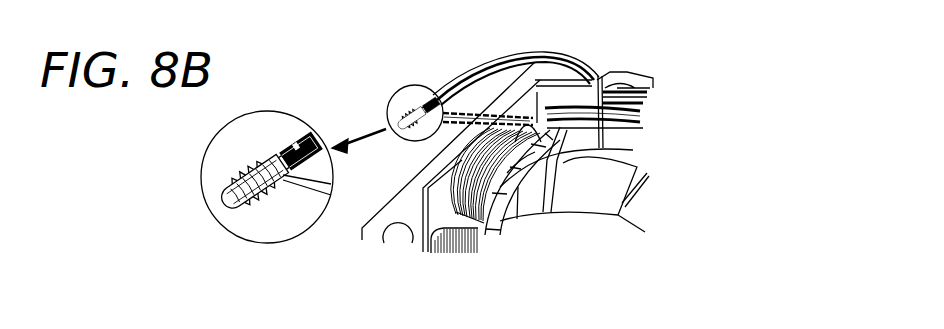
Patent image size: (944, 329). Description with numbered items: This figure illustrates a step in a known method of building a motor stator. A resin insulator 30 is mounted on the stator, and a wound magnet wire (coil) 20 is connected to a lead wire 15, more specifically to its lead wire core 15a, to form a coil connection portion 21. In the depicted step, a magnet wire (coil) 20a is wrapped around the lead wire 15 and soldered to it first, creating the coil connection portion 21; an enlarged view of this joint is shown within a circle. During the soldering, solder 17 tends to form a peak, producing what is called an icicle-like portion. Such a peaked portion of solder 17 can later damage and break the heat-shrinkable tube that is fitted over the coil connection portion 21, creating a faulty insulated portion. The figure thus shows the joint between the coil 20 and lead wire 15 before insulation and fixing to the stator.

The lead wire 15 is at (305, 143).
The lead wire core 15a is at (300, 147).
The solder 17 is at (233, 207).
The magnet wire (coil) 20 is at (513, 225).
The magnet wire (coil) 20a is at (326, 196).
The coil connection portion 21 is at (406, 104).
The resin insulator 30 is at (585, 198).